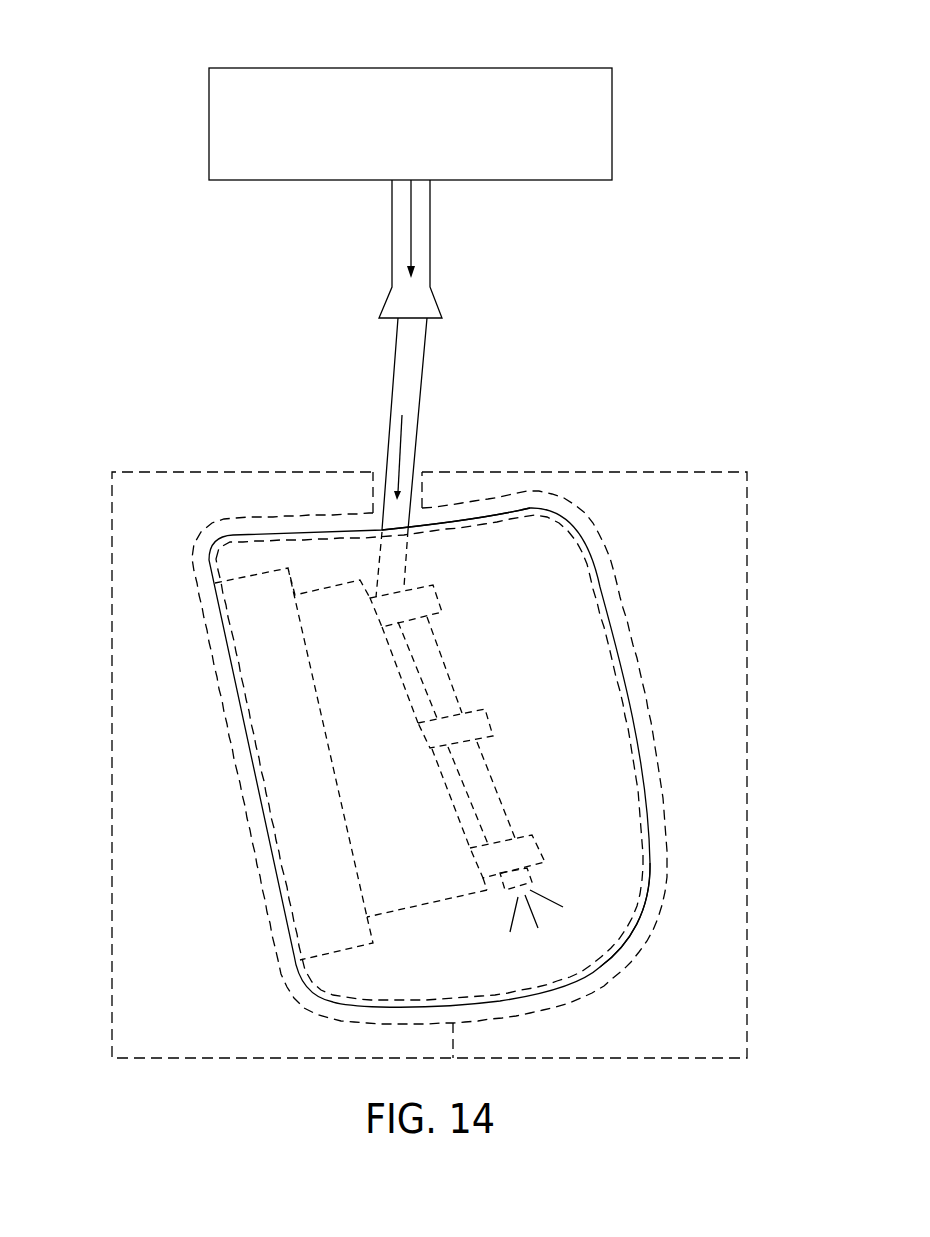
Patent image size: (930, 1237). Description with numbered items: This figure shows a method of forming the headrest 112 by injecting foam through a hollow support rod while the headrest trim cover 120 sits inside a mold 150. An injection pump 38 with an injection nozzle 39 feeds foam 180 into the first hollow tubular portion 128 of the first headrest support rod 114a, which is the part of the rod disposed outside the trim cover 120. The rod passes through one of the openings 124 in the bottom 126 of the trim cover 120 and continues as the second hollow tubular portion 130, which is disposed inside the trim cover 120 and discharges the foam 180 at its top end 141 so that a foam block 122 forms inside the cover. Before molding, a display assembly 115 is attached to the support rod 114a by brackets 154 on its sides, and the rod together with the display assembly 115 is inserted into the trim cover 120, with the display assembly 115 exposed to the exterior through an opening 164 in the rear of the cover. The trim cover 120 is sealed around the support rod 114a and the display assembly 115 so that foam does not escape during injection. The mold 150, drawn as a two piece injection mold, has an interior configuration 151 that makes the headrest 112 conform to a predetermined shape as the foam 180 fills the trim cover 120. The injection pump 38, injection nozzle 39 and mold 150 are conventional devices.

The injection pump 38 is at (550, 68).
The injection nozzle 39 is at (432, 246).
The first hollow tubular portion 128 is at (421, 380).
The bottom of the trim cover 126 is at (492, 514).
The openings 124 is at (408, 538).
The mold 150 is at (693, 470).
The headrest 112 is at (610, 591).
The interior configuration 151 is at (214, 678).
The foam block 122 is at (600, 764).
The headrest trim cover 120 is at (625, 940).
The display assembly 115 is at (279, 735).
The opening 164 is at (282, 970).
The brackets 154 is at (442, 607).
The first headrest support rod 114a is at (488, 763).
The second hollow tubular portion 130 is at (506, 815).
The top end 141 is at (541, 888).
The foam 180 is at (515, 915).